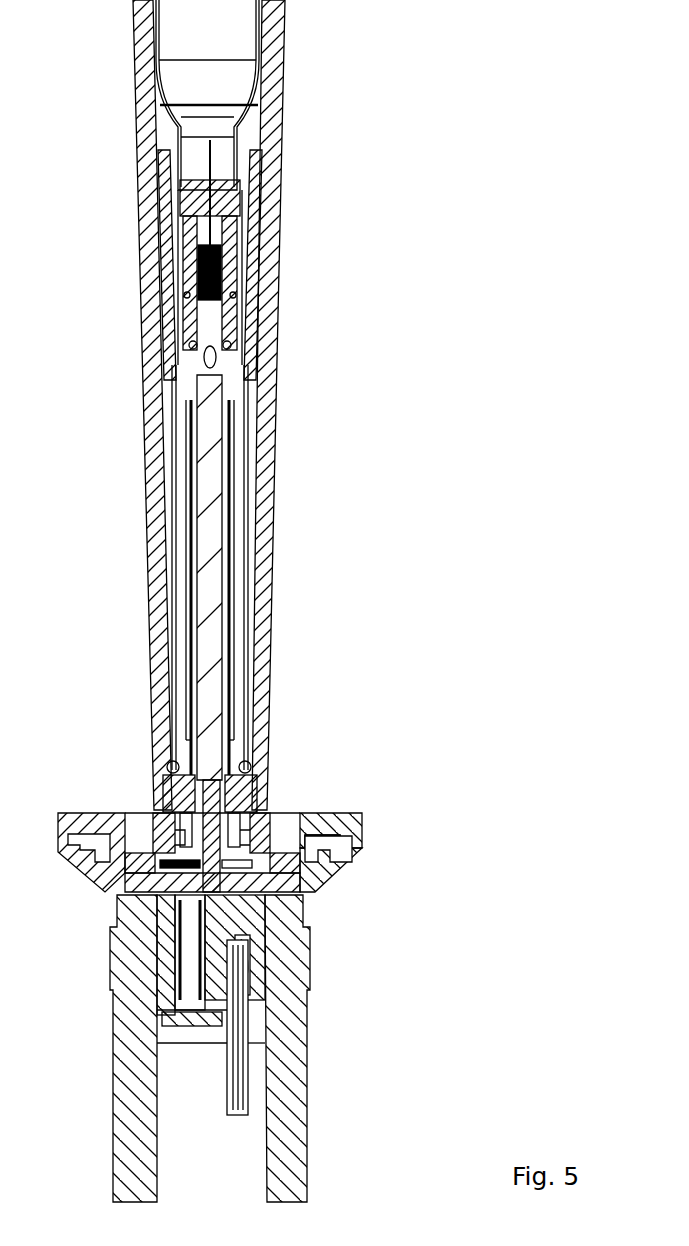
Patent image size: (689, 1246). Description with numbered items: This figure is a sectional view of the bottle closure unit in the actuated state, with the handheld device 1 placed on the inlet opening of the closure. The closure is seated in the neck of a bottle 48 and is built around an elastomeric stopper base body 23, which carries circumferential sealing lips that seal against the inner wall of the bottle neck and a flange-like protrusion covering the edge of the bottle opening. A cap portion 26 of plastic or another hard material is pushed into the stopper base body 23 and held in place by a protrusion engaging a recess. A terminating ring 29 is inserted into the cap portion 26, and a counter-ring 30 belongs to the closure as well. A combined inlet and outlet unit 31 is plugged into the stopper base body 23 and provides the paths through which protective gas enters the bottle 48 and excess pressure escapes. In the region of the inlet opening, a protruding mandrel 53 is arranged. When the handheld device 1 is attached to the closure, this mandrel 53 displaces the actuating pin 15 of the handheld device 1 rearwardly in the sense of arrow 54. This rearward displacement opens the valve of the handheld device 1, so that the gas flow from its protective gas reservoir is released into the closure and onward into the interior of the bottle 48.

The handheld device 1 is at (378, 327).
The actuating pin 15 is at (205, 800).
The stopper base body 23 is at (282, 880).
The cap portion 26 is at (327, 818).
The terminating ring 29 is at (100, 822).
The counter-ring 30 is at (338, 857).
The combined inlet and outlet unit 31 is at (248, 1003).
The bottle 48 is at (287, 1115).
The protruding mandrel 53 is at (168, 867).
The arrow 54 is at (71, 365).